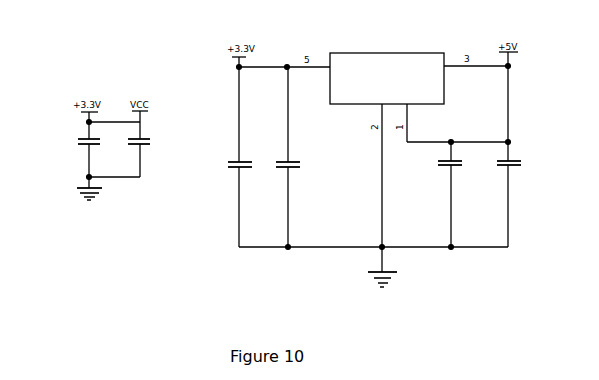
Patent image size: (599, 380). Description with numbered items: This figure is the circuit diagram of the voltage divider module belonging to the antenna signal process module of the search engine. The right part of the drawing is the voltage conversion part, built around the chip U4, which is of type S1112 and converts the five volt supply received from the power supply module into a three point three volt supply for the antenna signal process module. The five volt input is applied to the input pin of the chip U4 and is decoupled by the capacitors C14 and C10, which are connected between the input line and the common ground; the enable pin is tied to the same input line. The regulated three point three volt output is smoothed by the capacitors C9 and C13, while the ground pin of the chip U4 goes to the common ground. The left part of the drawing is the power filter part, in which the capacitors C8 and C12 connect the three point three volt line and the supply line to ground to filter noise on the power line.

The capacitor C8 is at (96, 143).
The capacitor C12 is at (150, 143).
The capacitor C9 is at (247, 165).
The capacitor C13 is at (298, 165).
The capacitor C14 is at (460, 164).
The capacitor C10 is at (519, 164).
The chip U4 is at (387, 68).